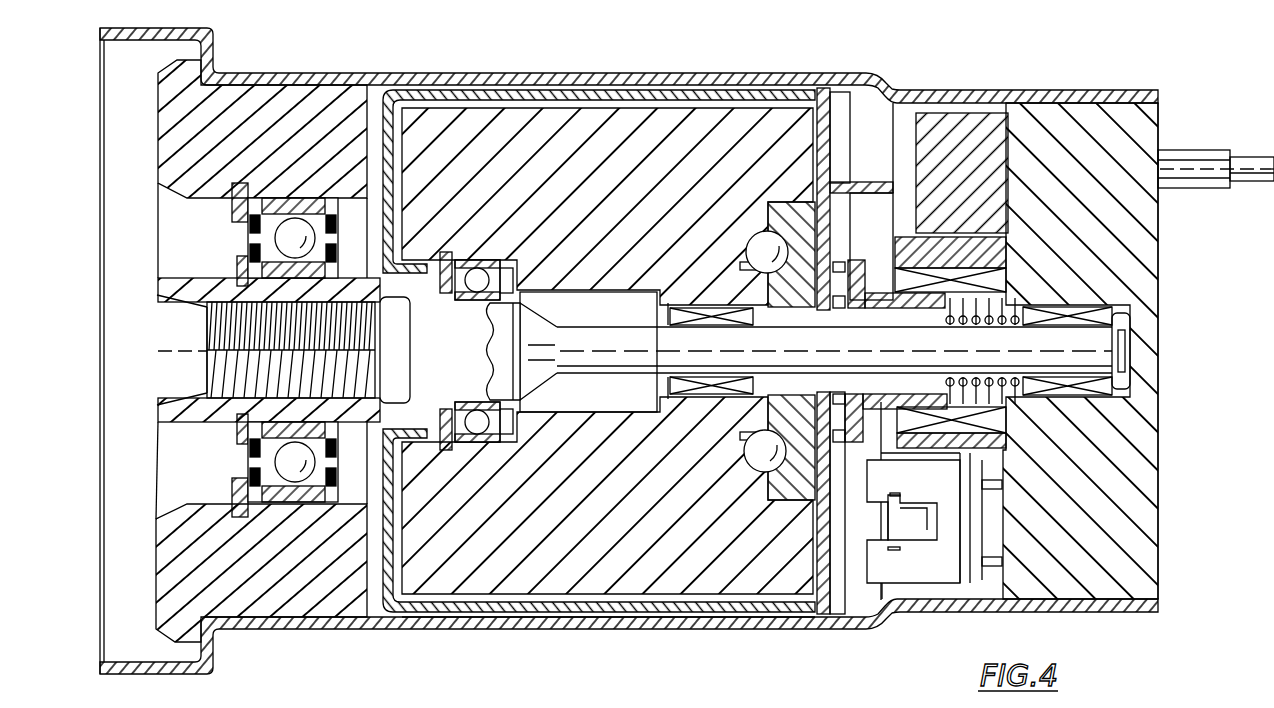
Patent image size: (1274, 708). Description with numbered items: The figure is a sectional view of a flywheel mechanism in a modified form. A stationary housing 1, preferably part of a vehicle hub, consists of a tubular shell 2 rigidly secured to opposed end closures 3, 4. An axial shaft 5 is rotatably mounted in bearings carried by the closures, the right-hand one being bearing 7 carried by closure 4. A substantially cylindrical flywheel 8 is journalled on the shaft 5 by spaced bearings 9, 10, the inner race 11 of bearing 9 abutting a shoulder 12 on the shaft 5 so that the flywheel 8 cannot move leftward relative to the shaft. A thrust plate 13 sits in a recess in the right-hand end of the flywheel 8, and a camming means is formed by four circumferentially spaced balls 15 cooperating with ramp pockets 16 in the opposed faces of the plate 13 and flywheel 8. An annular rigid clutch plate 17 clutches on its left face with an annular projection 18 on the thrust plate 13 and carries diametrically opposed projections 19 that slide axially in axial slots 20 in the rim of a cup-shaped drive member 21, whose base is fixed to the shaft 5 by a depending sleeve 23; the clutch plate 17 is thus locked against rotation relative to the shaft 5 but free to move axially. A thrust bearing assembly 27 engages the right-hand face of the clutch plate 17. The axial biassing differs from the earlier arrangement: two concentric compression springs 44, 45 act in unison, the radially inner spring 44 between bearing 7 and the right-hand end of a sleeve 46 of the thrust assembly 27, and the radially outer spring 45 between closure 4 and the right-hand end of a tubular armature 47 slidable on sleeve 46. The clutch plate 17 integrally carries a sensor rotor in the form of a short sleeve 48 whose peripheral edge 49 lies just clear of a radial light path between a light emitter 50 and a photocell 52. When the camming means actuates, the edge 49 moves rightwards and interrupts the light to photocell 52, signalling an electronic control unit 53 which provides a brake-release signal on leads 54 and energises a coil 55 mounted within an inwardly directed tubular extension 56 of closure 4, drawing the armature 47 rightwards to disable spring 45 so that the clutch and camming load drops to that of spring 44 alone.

The stationary housing 1 is at (483, 630).
The tubular shell 2 is at (585, 630).
The end closure 3 is at (318, 592).
The end closure 4 is at (1130, 582).
The axial shaft 5 is at (625, 352).
The bearing 7 is at (1088, 396).
The flywheel 8 is at (601, 545).
The bearing 9 is at (467, 442).
The bearing 10 is at (695, 396).
The inner race 11 is at (510, 290).
The shoulder 12 is at (470, 268).
The thrust plate 13 is at (798, 202).
The balls 15 is at (748, 248).
The ramp pockets 16 is at (272, 502).
The clutch plate 17 is at (846, 590).
The annular projection 18 is at (864, 246).
The projections 19 is at (822, 86).
The axial slots 20 is at (840, 92).
The cup-shaped drive member 21 is at (625, 612).
The depending sleeve 23 is at (445, 252).
The thrust bearing assembly 27 is at (856, 442).
The compression spring 44 is at (1040, 310).
The compression spring 45 is at (985, 300).
The sleeve 46 is at (925, 284).
The tubular armature 47 is at (880, 294).
The sensor rotor sleeve 48 is at (866, 182).
The peripheral edge 49 is at (925, 518).
The light emitter 50 is at (920, 490).
The photocell 52 is at (920, 575).
The electronic control unit 53 is at (977, 187).
The leads 54 is at (1228, 152).
The coil 55 is at (985, 262).
The tubular extension 56 is at (995, 446).